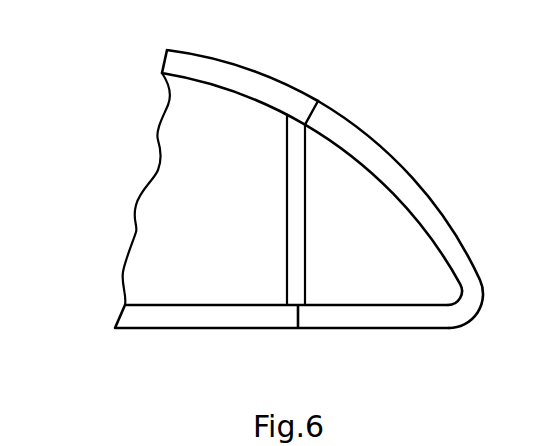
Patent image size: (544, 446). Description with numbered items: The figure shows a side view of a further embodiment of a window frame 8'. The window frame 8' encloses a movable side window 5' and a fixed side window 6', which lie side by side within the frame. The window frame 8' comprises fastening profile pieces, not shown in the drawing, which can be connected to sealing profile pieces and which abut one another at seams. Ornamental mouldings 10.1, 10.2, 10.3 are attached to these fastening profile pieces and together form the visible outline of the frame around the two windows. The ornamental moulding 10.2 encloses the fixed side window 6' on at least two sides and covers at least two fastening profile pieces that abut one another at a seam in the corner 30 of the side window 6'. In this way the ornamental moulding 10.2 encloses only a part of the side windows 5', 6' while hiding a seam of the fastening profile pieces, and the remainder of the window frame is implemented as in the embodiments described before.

The corner 30 is at (327, 202).
The ornamental moulding 10.1 is at (228, 73).
The ornamental moulding 10.2 is at (413, 192).
The ornamental moulding 10.3 is at (218, 320).
The window frame 8' is at (312, 79).
The movable side window 5' is at (210, 192).
The fixed side window 6' is at (377, 217).